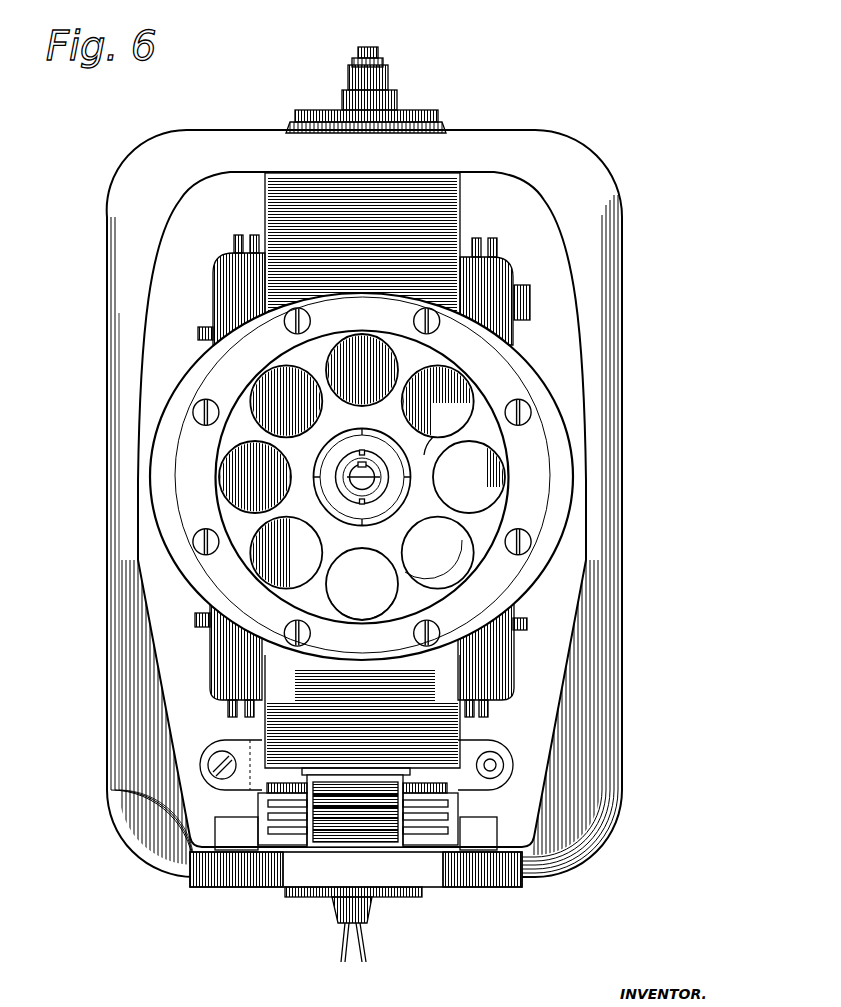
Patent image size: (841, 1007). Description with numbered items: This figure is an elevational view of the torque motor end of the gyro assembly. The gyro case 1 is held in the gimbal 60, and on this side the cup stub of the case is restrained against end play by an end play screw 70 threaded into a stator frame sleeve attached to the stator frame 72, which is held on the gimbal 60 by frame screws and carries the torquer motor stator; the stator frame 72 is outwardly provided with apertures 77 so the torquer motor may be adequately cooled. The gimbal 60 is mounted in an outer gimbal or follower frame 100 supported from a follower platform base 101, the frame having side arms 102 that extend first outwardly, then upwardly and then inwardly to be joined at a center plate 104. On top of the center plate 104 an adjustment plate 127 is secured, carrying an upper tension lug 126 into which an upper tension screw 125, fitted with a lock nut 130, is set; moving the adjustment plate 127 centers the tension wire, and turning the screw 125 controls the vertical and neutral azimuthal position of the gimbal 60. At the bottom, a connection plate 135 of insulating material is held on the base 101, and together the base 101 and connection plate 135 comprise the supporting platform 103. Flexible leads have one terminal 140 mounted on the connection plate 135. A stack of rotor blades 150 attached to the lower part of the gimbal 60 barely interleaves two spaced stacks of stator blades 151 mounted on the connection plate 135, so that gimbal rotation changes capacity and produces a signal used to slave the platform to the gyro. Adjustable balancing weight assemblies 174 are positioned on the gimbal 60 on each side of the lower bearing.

The gyro case 1 is at (505, 284).
The gimbal 60 is at (296, 299).
The end play screw 70 is at (350, 489).
The stator frame 72 is at (391, 425).
The apertures 77 is at (430, 442).
The outer gimbal or follower frame 100 is at (143, 187).
The follower platform base 101 is at (400, 892).
The side arms 102 is at (584, 398).
The supporting platform 103 is at (435, 900).
The center plate 104 is at (437, 112).
The upper tension screw 125 is at (378, 48).
The upper tension lug 126 is at (389, 78).
The adjustment plate 127 is at (342, 102).
The lock nut 130 is at (352, 62).
The connection plate 135 is at (432, 866).
The terminal 140 is at (336, 906).
The rotor blades 150 is at (316, 824).
The stator blades 151 is at (268, 818).
The adjustable balancing weight assemblies 174 is at (216, 757).